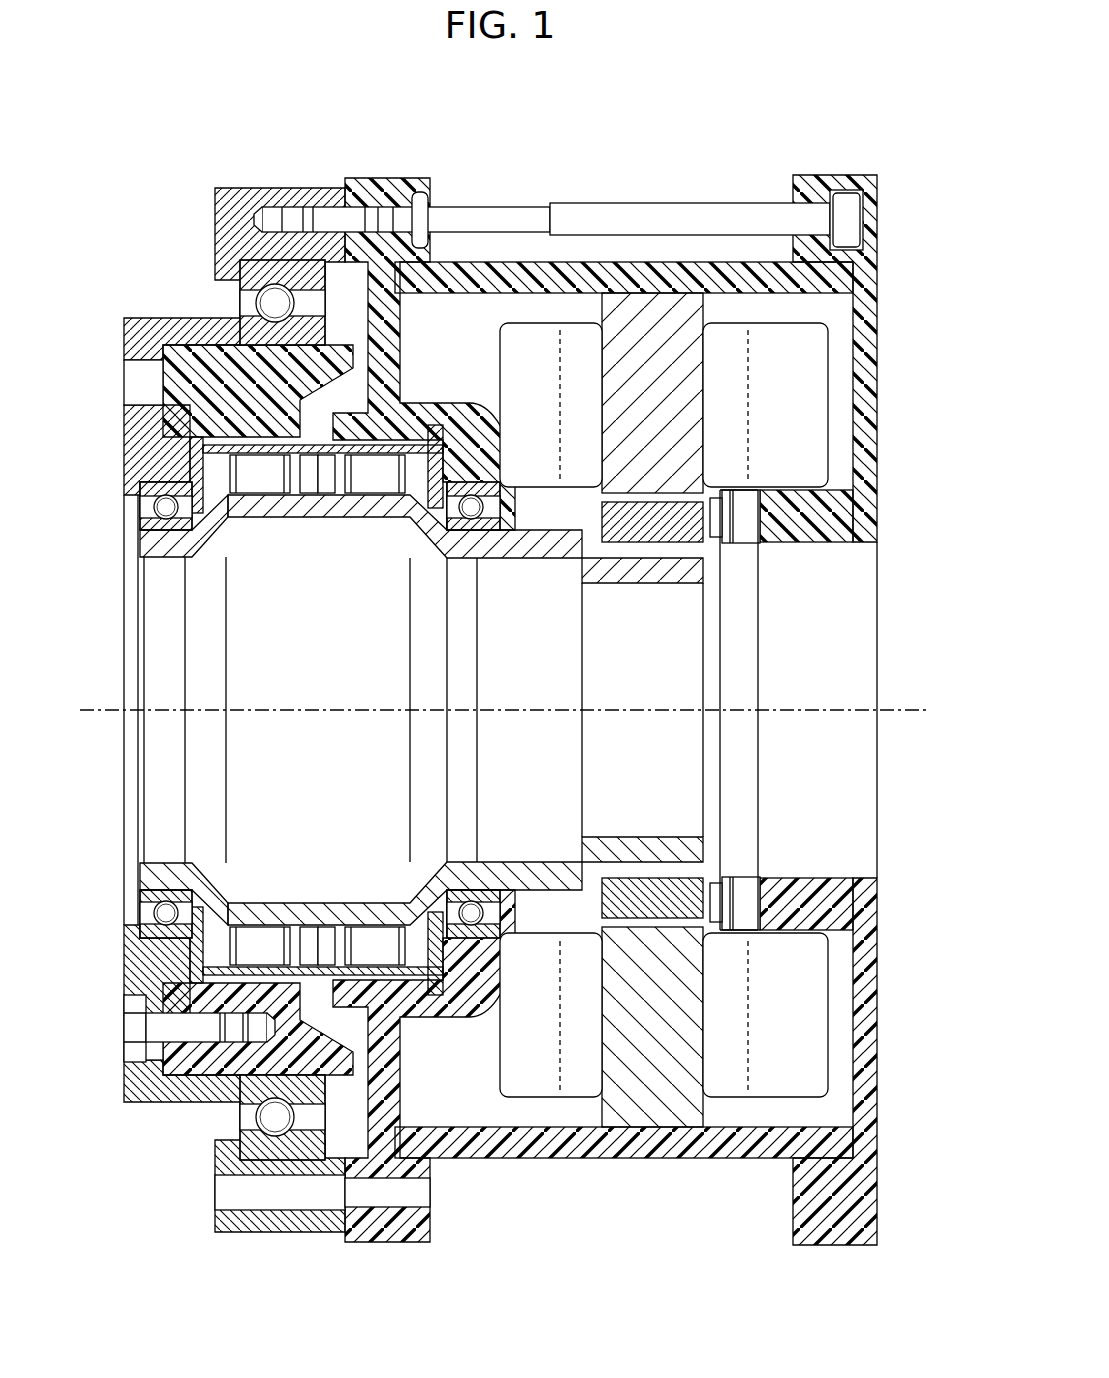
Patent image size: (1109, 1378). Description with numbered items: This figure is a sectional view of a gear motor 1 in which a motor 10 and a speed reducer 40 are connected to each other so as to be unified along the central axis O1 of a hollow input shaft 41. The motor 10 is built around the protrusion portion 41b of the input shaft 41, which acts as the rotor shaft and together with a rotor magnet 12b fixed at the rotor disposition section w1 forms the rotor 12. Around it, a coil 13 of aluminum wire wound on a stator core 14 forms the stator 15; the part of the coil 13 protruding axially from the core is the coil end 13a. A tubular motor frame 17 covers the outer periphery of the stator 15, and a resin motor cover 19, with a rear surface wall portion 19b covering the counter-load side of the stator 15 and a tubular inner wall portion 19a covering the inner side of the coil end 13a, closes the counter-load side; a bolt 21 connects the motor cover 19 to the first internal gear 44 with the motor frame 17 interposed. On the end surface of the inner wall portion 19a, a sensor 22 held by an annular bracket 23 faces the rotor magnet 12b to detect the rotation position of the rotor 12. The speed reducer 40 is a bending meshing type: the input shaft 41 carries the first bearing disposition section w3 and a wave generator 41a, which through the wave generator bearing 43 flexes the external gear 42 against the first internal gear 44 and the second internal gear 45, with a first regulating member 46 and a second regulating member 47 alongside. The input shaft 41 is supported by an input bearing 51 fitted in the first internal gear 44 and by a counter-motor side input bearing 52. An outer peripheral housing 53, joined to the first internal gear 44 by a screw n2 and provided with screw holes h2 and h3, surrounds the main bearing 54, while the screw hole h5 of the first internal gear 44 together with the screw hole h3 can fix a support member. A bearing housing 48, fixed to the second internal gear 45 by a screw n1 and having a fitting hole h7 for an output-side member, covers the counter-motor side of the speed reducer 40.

The gear motor 1 is at (744, 120).
The motor 10 is at (877, 146).
The rotor 12 is at (750, 591).
The rotor magnet 12b is at (668, 528).
The coil 13 is at (727, 420).
The coil end 13a is at (500, 345).
The stator core 14 is at (683, 378).
The stator 15 is at (794, 379).
The motor frame 17 is at (620, 278).
The motor cover 19 is at (873, 358).
The inner wall portion 19a is at (830, 518).
The rear surface wall portion 19b is at (866, 427).
The bolt 21 is at (813, 222).
The sensor 22 is at (752, 525).
The annular bracket 23 is at (750, 790).
The speed reducer 40 is at (125, 146).
The input shaft 41 is at (160, 792).
The wave generator 41a is at (232, 528).
The protrusion portion 41b is at (515, 582).
The external gear 42 is at (235, 462).
The wave generator bearing 43 is at (178, 538).
The first internal gear 44 is at (395, 378).
The second internal gear 45 is at (177, 390).
The first regulating member 46 is at (438, 440).
The second regulating member 47 is at (195, 445).
The bearing housing 48 is at (143, 332).
The input bearing 51 is at (462, 512).
The counter-motor side input bearing 52 is at (160, 510).
The outer peripheral housing 53 is at (225, 215).
The main bearing 54 is at (270, 303).
The screw hole h2 is at (318, 213).
The screw hole h3 is at (235, 1196).
The screw hole h5 is at (415, 1193).
The fitting hole h7 is at (140, 396).
The screw n1 is at (180, 1032).
The screw n2 is at (382, 215).
The rotor disposition section w1 is at (652, 555).
The first bearing disposition section w3 is at (470, 540).
The central axis O1 is at (527, 712).